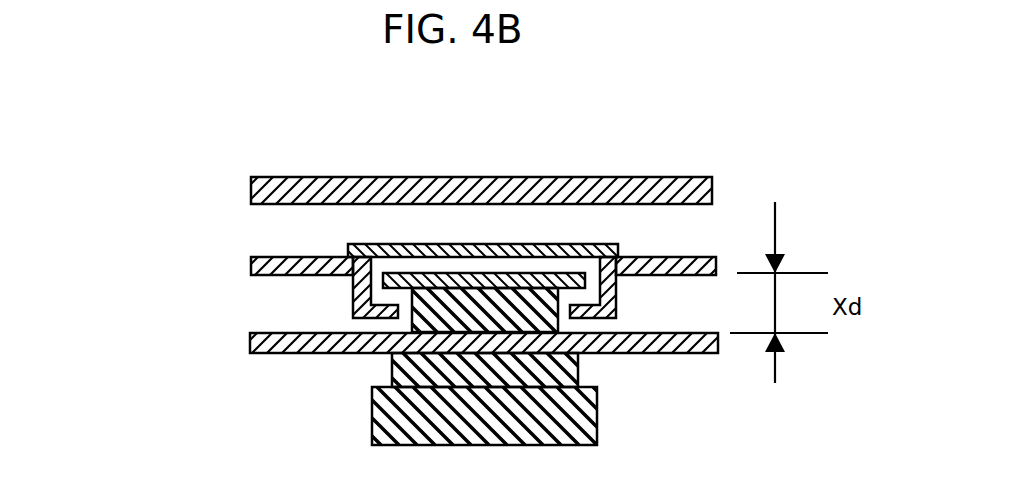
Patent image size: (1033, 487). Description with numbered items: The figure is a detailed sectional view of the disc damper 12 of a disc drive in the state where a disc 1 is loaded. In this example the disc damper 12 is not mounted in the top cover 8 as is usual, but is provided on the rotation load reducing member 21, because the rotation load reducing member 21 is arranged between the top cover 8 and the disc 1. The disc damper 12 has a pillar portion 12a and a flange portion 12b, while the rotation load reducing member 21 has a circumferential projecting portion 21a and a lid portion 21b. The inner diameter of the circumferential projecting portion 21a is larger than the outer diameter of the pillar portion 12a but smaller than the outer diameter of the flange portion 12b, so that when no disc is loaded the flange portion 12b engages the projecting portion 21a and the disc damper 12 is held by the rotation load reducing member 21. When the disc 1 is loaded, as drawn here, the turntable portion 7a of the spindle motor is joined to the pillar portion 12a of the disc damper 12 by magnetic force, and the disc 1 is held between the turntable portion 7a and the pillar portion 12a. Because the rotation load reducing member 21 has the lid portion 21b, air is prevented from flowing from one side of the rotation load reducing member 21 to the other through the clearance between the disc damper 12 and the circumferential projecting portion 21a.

The disc 1 is at (280, 353).
The turntable portion 7a is at (597, 420).
The top cover 8 is at (614, 178).
The disc damper 12 is at (367, 230).
The pillar portion 12a is at (412, 322).
The flange portion 12b is at (383, 282).
The rotation load reducing member 21 is at (297, 255).
The circumferential projecting portion 21a is at (353, 312).
The lid portion 21b is at (397, 243).